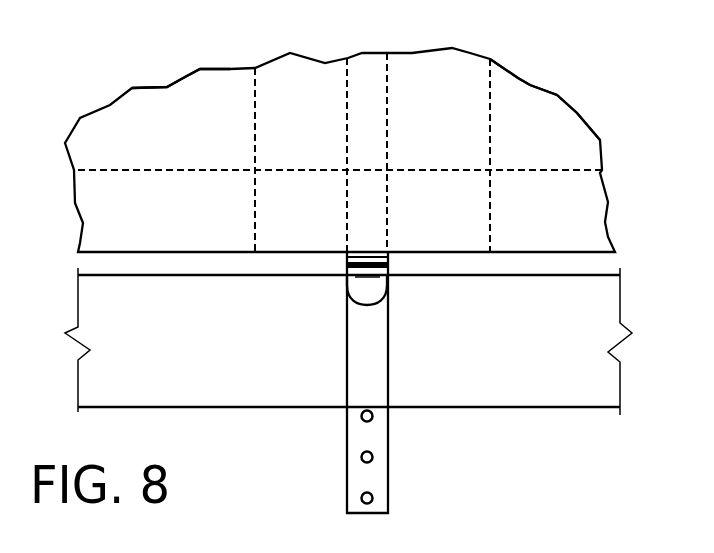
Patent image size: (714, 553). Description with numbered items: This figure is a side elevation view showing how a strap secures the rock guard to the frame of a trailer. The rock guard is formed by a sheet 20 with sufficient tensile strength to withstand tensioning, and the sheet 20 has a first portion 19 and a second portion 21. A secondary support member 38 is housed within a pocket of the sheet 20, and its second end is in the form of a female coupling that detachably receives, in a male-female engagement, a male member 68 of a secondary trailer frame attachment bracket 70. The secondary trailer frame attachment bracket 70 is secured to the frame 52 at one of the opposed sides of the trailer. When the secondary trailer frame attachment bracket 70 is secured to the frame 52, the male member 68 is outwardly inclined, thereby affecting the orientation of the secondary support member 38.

The first portion 19 is at (150, 130).
The sheet 20 is at (198, 128).
The second portion 21 is at (540, 135).
The secondary support member 38 is at (370, 140).
The frame 52 is at (525, 408).
The male member 68 is at (360, 257).
The secondary trailer frame attachment bracket 70 is at (388, 435).